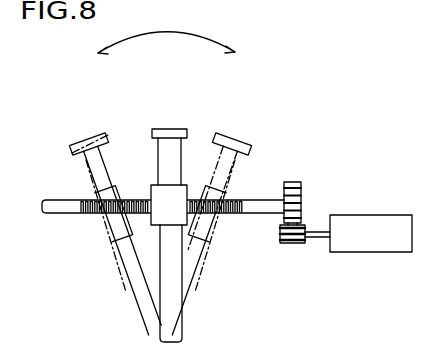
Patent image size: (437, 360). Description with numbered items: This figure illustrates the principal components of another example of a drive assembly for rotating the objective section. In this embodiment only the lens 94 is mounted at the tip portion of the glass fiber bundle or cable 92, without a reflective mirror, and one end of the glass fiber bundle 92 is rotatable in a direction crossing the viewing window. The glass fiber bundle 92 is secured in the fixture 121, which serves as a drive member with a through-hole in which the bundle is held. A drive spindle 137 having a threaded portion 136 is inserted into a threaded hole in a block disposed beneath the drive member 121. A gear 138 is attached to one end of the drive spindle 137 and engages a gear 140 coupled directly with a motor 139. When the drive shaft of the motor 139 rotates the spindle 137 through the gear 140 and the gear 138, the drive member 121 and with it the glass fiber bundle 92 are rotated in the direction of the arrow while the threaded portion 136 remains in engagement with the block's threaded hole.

The glass fiber bundle 92 is at (175, 322).
The lens 94 is at (165, 131).
The fixture 121 is at (158, 222).
The threaded portion 136 is at (238, 213).
The drive spindle 137 is at (262, 200).
The gear 138 is at (299, 183).
The motor 139 is at (373, 223).
The gear 140 is at (290, 247).